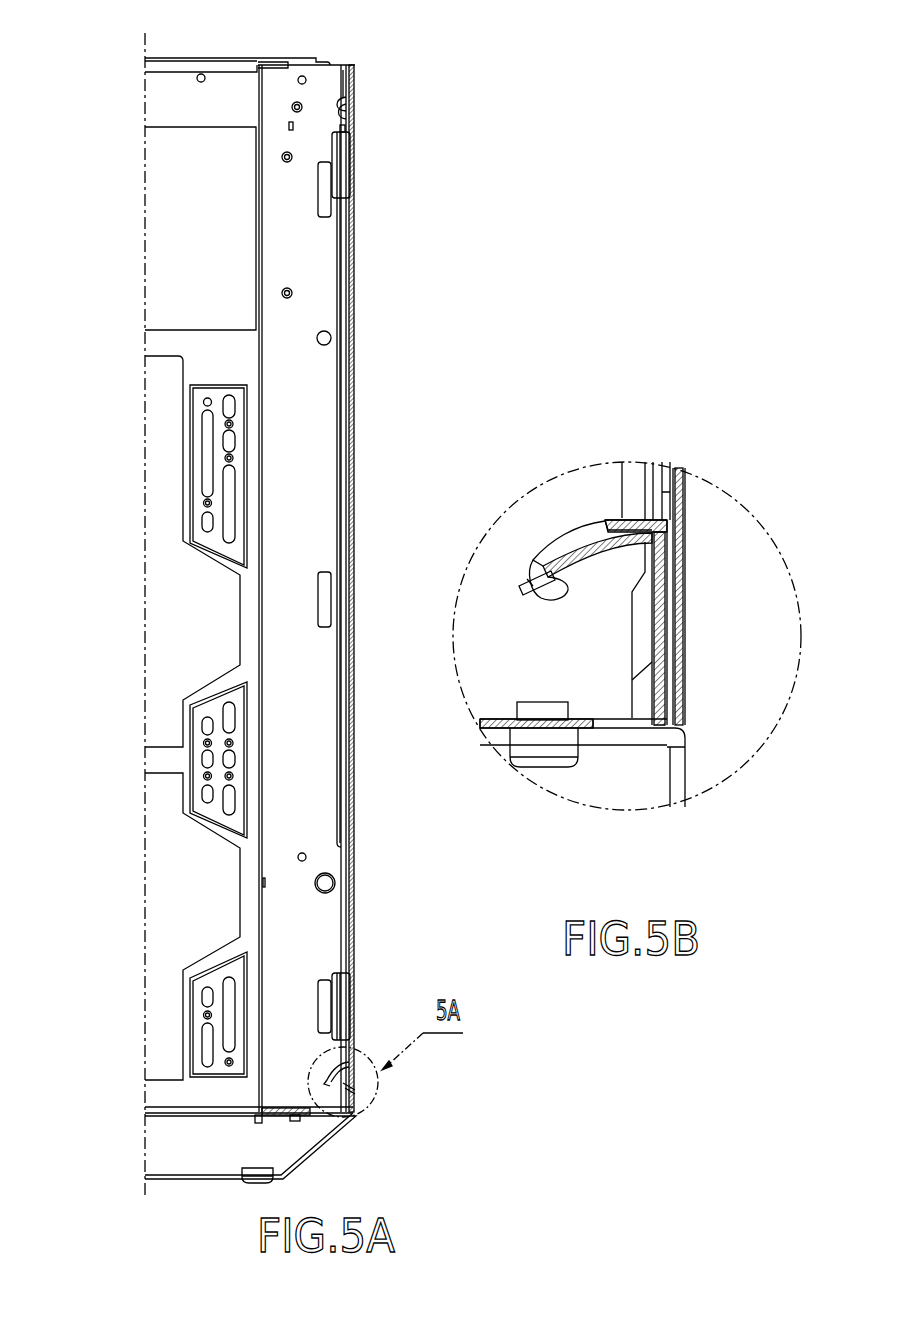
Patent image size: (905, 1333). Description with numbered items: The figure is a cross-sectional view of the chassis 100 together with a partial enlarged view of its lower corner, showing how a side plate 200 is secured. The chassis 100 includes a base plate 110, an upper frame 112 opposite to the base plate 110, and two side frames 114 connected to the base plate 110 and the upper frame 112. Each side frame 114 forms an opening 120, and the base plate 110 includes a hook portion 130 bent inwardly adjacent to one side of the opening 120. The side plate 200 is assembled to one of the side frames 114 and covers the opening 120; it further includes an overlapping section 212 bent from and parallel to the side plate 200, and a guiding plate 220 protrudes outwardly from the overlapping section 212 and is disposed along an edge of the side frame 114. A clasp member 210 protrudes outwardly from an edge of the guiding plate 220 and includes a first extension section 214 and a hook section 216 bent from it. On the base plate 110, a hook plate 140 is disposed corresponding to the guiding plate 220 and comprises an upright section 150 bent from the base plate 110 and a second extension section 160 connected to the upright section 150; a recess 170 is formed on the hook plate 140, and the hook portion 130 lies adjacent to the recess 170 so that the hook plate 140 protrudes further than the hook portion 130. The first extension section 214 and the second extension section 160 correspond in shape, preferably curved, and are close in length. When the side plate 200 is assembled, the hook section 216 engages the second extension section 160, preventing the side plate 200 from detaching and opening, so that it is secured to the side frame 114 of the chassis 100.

In FIG. 5A, the chassis 100 is at (142, 482).
In FIG. 5A, the base plate 110 is at (192, 1113).
In FIG. 5B, the base plate 110 is at (483, 718).
In FIG. 5A, the upper frame 112 is at (224, 58).
In FIG. 5A, the side frame 114 is at (353, 78).
In FIG. 5A, the opening 120 is at (311, 263).
In FIG. 5A, the hook portion 130 is at (353, 1087).
In FIG. 5B, the hook portion 130 is at (553, 607).
In FIG. 5B, the hook plate 140 is at (580, 632).
In FIG. 5B, the upright section 150 is at (653, 665).
In FIG. 5B, the second extension section 160 is at (613, 547).
In FIG. 5B, the recess 170 is at (530, 580).
In FIG. 5A, the side plate 200 is at (355, 288).
In FIG. 5B, the side plate 200 is at (678, 490).
In FIG. 5A, the clasp member 210 is at (327, 1075).
In FIG. 5B, the clasp member 210 is at (557, 428).
In FIG. 5B, the overlapping section 212 is at (667, 588).
In FIG. 5B, the first extension section 214 is at (577, 537).
In FIG. 5B, the hook section 216 is at (550, 580).
In FIG. 5B, the guiding plate 220 is at (622, 522).